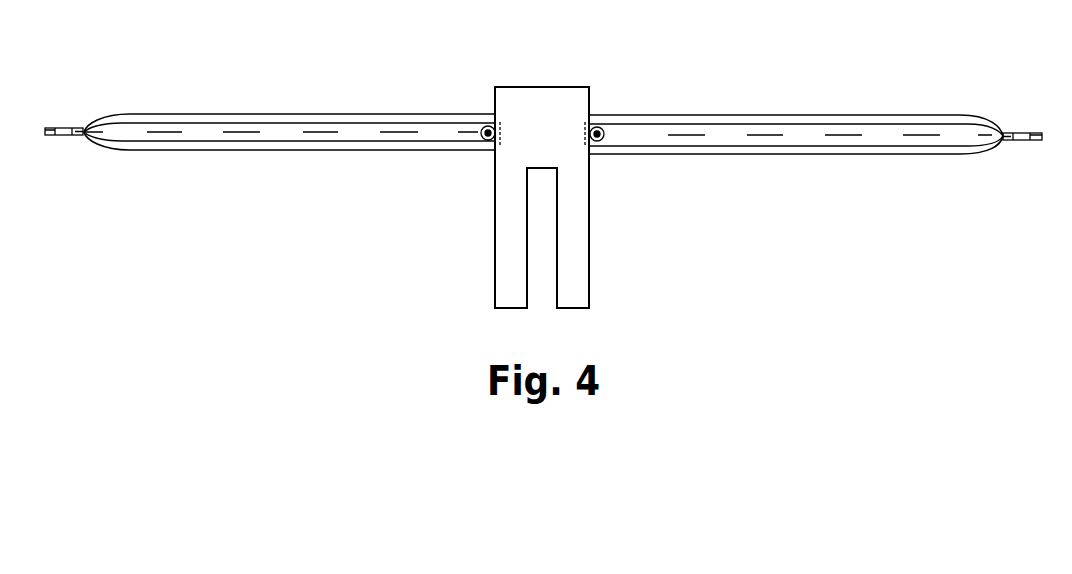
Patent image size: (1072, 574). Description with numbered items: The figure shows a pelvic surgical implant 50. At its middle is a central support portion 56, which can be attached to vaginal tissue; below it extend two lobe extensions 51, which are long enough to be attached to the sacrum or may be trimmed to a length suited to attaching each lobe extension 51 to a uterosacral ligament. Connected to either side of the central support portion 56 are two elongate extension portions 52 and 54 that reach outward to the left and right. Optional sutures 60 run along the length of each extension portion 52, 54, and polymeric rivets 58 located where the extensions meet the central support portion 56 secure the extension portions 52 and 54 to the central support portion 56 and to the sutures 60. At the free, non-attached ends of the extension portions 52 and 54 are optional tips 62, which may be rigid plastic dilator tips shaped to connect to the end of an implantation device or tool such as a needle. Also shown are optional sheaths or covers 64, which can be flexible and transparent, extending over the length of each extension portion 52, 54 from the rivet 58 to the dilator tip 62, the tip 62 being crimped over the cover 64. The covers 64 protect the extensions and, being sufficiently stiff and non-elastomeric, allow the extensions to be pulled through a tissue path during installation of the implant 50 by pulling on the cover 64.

The implant 50 is at (438, 207).
The lobe extensions 51 is at (503, 276).
The extension portion 52 is at (123, 128).
The extension portion 54 is at (962, 140).
The central support portion 56 is at (551, 144).
The polymeric rivets 58 is at (488, 130).
The sutures 60 is at (314, 130).
The tips 62 is at (63, 127).
The sheaths or covers 64 is at (218, 153).